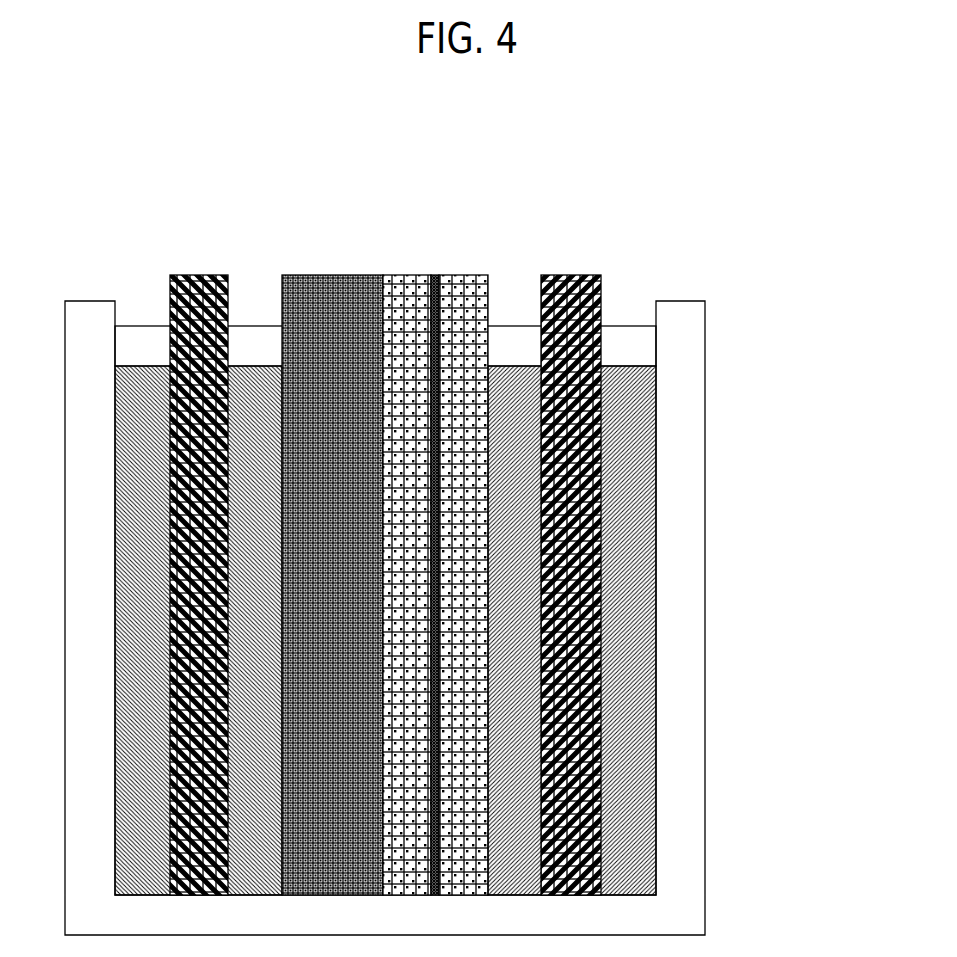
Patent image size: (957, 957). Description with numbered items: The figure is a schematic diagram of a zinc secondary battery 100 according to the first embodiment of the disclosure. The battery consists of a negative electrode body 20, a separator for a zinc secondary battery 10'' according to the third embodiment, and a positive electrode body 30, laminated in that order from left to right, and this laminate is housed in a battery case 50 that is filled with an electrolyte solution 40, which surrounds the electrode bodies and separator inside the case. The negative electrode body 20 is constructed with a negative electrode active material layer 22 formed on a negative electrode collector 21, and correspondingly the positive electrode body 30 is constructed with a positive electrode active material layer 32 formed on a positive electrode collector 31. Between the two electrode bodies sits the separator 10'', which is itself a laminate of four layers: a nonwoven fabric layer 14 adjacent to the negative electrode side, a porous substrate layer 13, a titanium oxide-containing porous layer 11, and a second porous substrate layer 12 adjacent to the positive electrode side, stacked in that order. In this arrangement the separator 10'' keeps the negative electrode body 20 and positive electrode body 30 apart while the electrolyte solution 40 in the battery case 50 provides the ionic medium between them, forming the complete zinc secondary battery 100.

The zinc secondary battery 100 is at (469, 530).
The battery case 50 is at (670, 817).
The electrolyte solution 40 is at (630, 348).
The negative electrode body 20 is at (190, 510).
The negative electrode collector 21 is at (197, 298).
The negative electrode active material layer 22 is at (146, 375).
The positive electrode body 30 is at (582, 513).
The positive electrode collector 31 is at (568, 300).
The positive electrode active material layer 32 is at (620, 390).
The separator for a zinc secondary battery 10'' is at (386, 510).
The nonwoven fabric layer 14 is at (347, 280).
The porous substrate layer 13 is at (395, 280).
The titanium oxide-containing porous layer 11 is at (427, 280).
The porous substrate layer 12 is at (453, 283).